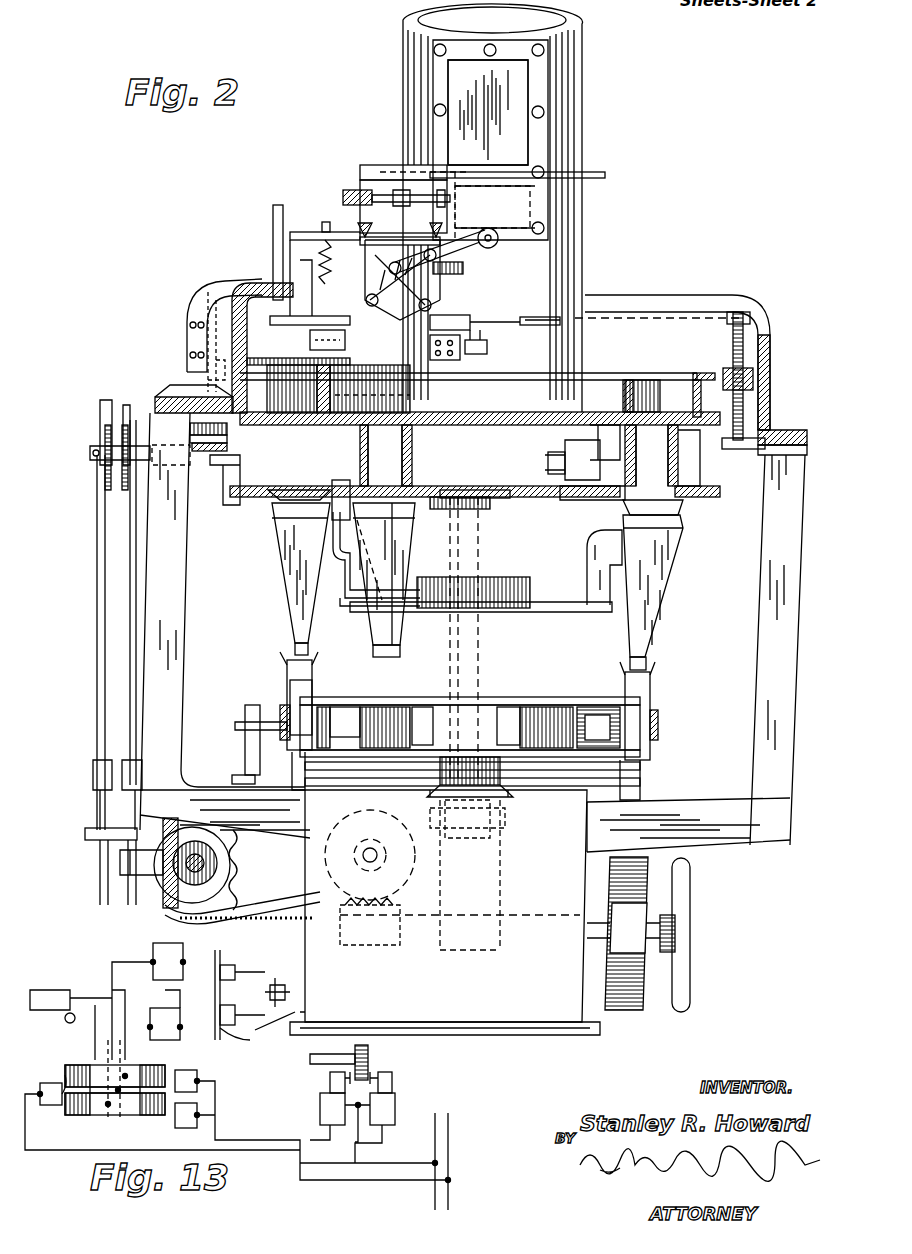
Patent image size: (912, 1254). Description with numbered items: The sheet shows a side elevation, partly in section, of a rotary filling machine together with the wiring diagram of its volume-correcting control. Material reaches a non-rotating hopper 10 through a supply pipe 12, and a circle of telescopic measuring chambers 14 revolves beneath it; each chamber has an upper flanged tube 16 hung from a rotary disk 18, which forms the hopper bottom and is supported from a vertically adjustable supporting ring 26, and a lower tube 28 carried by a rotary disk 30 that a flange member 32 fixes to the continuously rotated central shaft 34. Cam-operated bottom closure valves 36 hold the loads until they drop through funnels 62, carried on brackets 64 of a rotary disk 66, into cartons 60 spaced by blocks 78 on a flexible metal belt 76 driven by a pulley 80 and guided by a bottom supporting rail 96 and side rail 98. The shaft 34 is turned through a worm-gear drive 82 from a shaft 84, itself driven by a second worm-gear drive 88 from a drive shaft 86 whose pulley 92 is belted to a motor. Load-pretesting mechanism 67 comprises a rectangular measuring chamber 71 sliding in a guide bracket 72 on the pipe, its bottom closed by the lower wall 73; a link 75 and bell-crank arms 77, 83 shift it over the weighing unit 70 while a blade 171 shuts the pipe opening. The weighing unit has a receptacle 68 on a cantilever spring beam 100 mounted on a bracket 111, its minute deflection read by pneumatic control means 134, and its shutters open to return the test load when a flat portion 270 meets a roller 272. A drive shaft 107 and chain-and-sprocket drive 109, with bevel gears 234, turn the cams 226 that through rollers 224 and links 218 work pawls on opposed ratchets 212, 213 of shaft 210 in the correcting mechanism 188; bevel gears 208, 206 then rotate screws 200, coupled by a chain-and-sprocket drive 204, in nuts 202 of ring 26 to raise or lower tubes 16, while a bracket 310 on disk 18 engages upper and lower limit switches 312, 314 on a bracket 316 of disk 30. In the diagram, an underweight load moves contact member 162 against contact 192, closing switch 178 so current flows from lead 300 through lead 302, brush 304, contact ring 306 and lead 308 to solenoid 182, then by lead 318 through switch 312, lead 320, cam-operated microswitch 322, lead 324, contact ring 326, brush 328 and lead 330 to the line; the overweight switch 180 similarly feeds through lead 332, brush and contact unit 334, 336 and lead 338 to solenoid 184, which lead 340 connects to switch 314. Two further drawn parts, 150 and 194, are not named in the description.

In FIG. 2, the hopper 10 is at (620, 373).
In FIG. 2, the supply pipe 12 is at (565, 105).
In FIG. 2, the measuring chambers 14 is at (385, 455).
In FIG. 2, the flanged tubes 16 is at (412, 440).
In FIG. 2, the rotary disk 18 is at (500, 412).
In FIG. 2, the supporting ring 26 is at (754, 378).
In FIG. 2, the upstanding tubes 28 is at (412, 460).
In FIG. 2, the rotary disk 30 is at (495, 498).
In FIG. 2, the flange member 32 is at (485, 530).
In FIG. 2, the central shaft 34 is at (480, 656).
In FIG. 2, the bottom closure valve 36 is at (300, 500).
In FIG. 2, the cartons 60 is at (290, 680).
In FIG. 2, the funnels 62 is at (300, 600).
In FIG. 2, the brackets 64 is at (587, 576).
In FIG. 2, the rotary disk 66 is at (552, 616).
In FIG. 2, the load-pretesting mechanism 67 is at (303, 173).
In FIG. 2, the weighing receptacle 68 is at (345, 228).
In FIG. 2, the weighing unit 70 is at (480, 292).
In FIG. 2, the rectangular measuring chamber 71 is at (530, 212).
In FIG. 2, the guide bracket 72 is at (485, 160).
In FIG. 2, the lower wall 73 is at (498, 240).
In FIG. 2, the link 75 is at (416, 206).
In FIG. 2, the flexible metal belt 76 is at (582, 705).
In FIG. 2, the arm 77 is at (372, 165).
In FIG. 2, the blocks 78 is at (515, 707).
In FIG. 2, the driving pulley 80 is at (532, 700).
In FIG. 2, the worm-gear drive 82 is at (524, 843).
In FIG. 2, the arm 83 is at (352, 190).
In FIG. 2, the shaft 84 is at (366, 838).
In FIG. 2, the drive shaft 86 is at (495, 942).
In FIG. 2, the second worm-gear drive 88 is at (358, 956).
In FIG. 2, the pulley 92 is at (622, 1010).
In FIG. 2, the bottom supporting rail 96 is at (292, 762).
In FIG. 2, the side rail 98 is at (278, 725).
In FIG. 2, the cantilever spring beam 100 is at (309, 232).
In FIG. 2, the drive shaft 107 is at (218, 860).
In FIG. 2, the chain and sprocket drive 109 is at (268, 905).
In FIG. 2, the bracket 111 is at (265, 255).
In FIG. 2, the pneumatically operated control means 134 is at (465, 354).
In FIG. 2, the mold block 150 is at (410, 395).
In FIG. 13, the contact member 162 is at (368, 1060).
In FIG. 2, the blade 171 is at (605, 174).
In FIG. 13, the underweight circuit-closing switch 178 is at (320, 1110).
In FIG. 13, the overweight circuit-closing switch 180 is at (395, 1108).
In FIG. 13, the volume-correcting solenoid 182 is at (153, 958).
In FIG. 13, the solenoid 184 is at (165, 1008).
In FIG. 2, the correcting mechanism 188 is at (132, 406).
In FIG. 13, the contact 192 is at (330, 1078).
In FIG. 13, the contact 194 is at (392, 1086).
In FIG. 2, the screws 200 is at (205, 303).
In FIG. 2, the nuts 202 is at (760, 370).
In FIG. 2, the chain and sprocket drive 204 is at (636, 307).
In FIG. 2, the bevel gear 206 is at (228, 448).
In FIG. 2, the bevel gear 208 is at (185, 475).
In FIG. 2, the shaft 210 is at (92, 450).
In FIG. 2, the ratchet 212 is at (125, 490).
In FIG. 2, the ratchet 213 is at (108, 492).
In FIG. 2, the links 218 is at (105, 670).
In FIG. 2, the roller 224 is at (93, 797).
In FIG. 2, the cams 226 is at (100, 905).
In FIG. 2, the bevel gears 234 is at (146, 899).
In FIG. 2, the flat portion 270 is at (470, 258).
In FIG. 2, the roller 272 is at (492, 206).
In FIG. 13, the lead 300 is at (383, 1163).
In FIG. 13, the lead 302 is at (302, 1165).
In FIG. 13, the brush 304 is at (190, 1110).
In FIG. 13, the contact ring 306 is at (97, 1110).
In FIG. 13, the lead 308 is at (112, 965).
In FIG. 2, the bracket 310 is at (592, 430).
In FIG. 2, the upper limiting switch 312 is at (557, 441).
In FIG. 13, the upper limiting switch 312 is at (259, 973).
In FIG. 2, the lower limiting switch 314 is at (565, 498).
In FIG. 13, the lower limiting switch 314 is at (265, 1029).
In FIG. 2, the bracket 316 is at (546, 463).
In FIG. 13, the bracket 316 is at (230, 962).
In FIG. 13, the lead 318 is at (190, 962).
In FIG. 13, the lead 320 is at (165, 990).
In FIG. 13, the cam-operated microswitch 322 is at (67, 995).
In FIG. 13, the lead 324 is at (95, 1030).
In FIG. 13, the contact ring 326 is at (122, 1118).
In FIG. 13, the brush 328 is at (48, 1140).
In FIG. 13, the lead 330 is at (370, 1180).
In FIG. 13, the lead 332 is at (248, 1139).
In FIG. 13, the brush 334 is at (190, 1072).
In FIG. 13, the contact 336 is at (90, 1070).
In FIG. 13, the lead 338 is at (120, 1082).
In FIG. 13, the lead 340 is at (225, 1032).